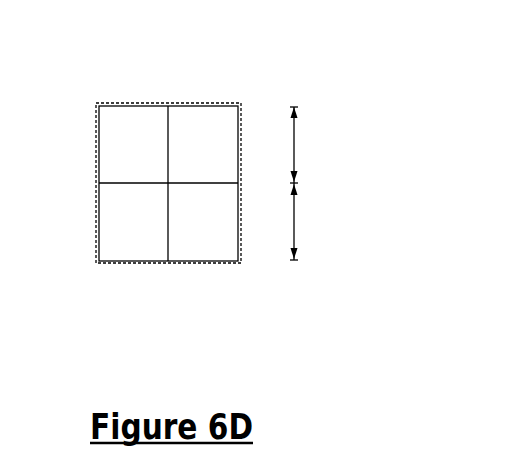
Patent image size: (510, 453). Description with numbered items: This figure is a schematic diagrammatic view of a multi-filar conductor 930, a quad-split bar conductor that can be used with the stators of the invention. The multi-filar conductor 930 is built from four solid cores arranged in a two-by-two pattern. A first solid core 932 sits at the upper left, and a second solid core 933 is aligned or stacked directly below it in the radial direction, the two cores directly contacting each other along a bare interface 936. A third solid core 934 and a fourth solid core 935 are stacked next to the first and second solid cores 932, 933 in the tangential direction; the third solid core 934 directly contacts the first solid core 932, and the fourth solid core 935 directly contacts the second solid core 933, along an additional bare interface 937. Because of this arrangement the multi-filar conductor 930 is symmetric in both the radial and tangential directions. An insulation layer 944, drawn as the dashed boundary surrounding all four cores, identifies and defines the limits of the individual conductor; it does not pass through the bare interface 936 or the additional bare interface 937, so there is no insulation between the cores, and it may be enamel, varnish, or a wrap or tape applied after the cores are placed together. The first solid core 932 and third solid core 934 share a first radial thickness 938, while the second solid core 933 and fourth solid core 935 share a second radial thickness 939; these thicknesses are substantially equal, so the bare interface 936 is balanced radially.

The multi-filar conductor 930 is at (90, 87).
The first solid core 932 is at (161, 160).
The second solid core 933 is at (161, 242).
The third solid core 934 is at (225, 160).
The fourth solid core 935 is at (225, 242).
The bare interface 936 is at (138, 184).
The additional bare interface 937 is at (168, 242).
The first radial thickness 938 is at (294, 146).
The second radial thickness 939 is at (295, 222).
The insulation layer 944 is at (241, 125).